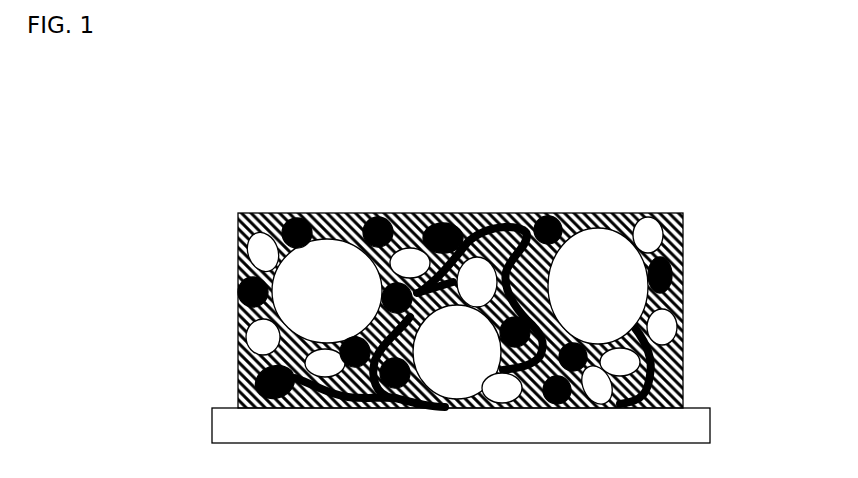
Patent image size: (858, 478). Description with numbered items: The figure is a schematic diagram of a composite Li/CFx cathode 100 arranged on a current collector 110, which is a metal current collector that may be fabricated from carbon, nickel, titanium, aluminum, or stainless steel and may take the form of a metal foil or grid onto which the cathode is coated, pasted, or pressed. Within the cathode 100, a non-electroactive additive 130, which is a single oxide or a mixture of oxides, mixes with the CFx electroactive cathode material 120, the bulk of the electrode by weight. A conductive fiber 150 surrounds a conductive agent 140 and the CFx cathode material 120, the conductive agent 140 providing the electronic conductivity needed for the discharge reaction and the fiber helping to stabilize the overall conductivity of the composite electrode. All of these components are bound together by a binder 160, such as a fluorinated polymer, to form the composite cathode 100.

The composite cathode 100 is at (470, 142).
The current collector 110 is at (225, 422).
The electroactive cathode material 120 is at (598, 298).
The non-electroactive additive 130 is at (655, 234).
The conductive agent 140 is at (240, 290).
The conductive fiber 150 is at (660, 375).
The binder 160 is at (238, 357).